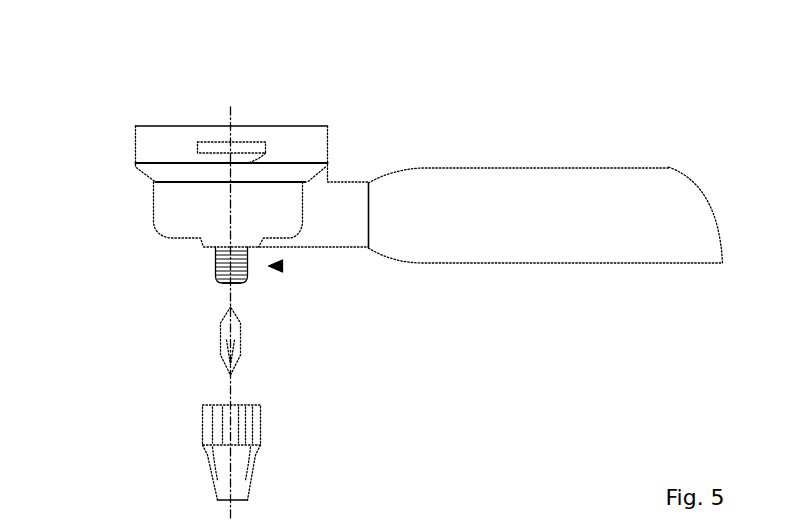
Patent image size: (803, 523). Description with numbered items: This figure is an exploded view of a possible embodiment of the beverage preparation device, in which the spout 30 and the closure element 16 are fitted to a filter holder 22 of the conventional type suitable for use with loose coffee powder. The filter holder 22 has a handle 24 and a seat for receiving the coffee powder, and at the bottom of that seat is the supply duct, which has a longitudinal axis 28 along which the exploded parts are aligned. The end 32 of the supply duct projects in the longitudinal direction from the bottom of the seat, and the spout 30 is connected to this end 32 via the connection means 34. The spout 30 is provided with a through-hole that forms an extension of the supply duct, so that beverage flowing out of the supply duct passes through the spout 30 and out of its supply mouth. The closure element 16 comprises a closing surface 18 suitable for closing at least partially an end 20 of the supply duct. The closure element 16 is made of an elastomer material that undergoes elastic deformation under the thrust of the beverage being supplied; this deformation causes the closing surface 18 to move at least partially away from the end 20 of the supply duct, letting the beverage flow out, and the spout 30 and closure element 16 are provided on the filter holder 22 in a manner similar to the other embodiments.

The closure element 16 is at (237, 335).
The closing surface 18 is at (232, 318).
The end of the supply duct 20 is at (237, 283).
The filter holder 22 is at (560, 158).
The handle 24 is at (685, 197).
The longitudinal axis 28 is at (230, 107).
The spout 30 is at (258, 423).
The end of the supply duct 32 is at (227, 268).
The connection means 34 is at (280, 266).